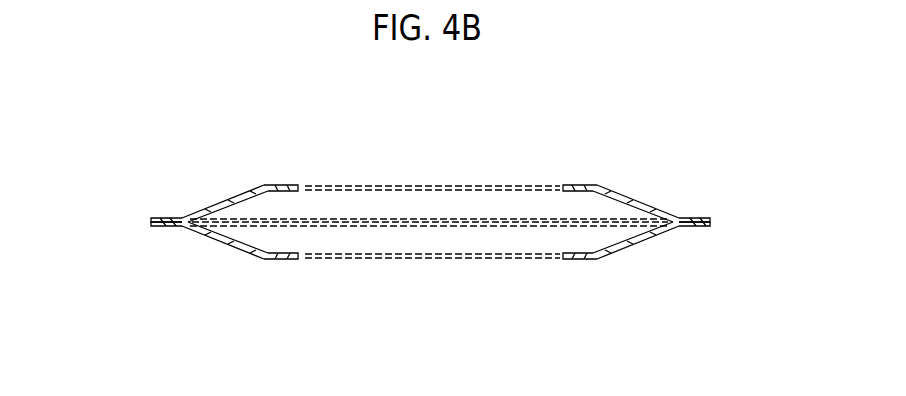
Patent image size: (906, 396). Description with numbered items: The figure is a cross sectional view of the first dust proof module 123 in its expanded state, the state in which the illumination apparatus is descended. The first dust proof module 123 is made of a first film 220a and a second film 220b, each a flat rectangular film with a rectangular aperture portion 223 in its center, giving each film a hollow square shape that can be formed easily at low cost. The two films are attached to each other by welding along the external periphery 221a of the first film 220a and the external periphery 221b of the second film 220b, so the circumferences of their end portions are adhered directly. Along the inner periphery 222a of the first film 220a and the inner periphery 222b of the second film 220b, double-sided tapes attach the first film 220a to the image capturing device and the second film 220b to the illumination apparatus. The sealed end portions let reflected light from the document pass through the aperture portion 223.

The first dust proof module 123 is at (482, 132).
The first film 220a is at (633, 198).
The second film 220b is at (645, 243).
The external periphery of the first film 221a is at (152, 219).
The external periphery of the second film 221b is at (152, 226).
The inner periphery of the first film 222a is at (283, 186).
The inner periphery of the second film 222b is at (273, 259).
The aperture portion 223 is at (442, 186).